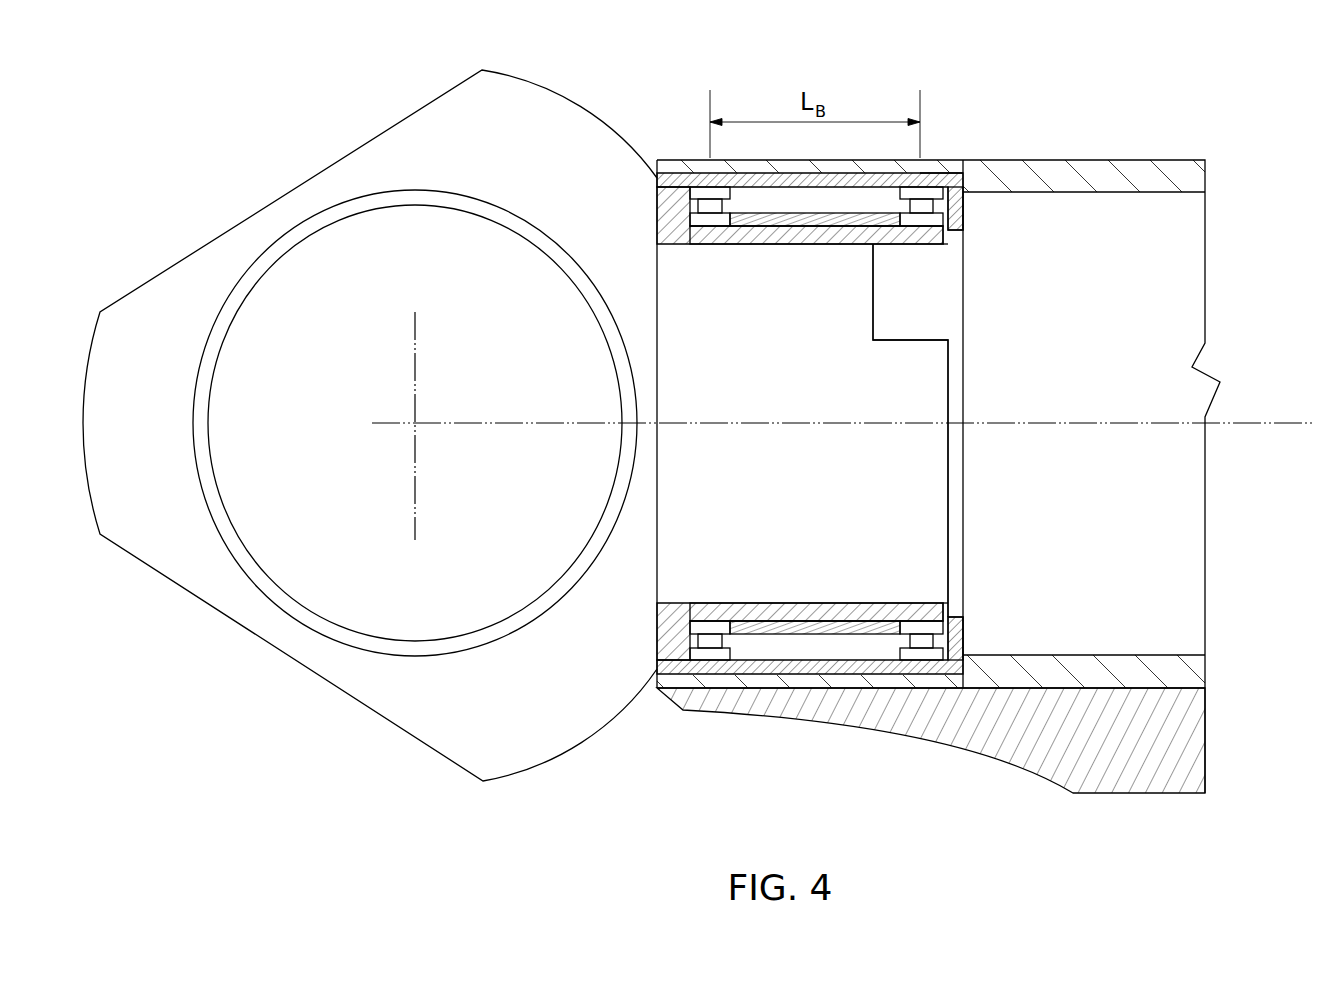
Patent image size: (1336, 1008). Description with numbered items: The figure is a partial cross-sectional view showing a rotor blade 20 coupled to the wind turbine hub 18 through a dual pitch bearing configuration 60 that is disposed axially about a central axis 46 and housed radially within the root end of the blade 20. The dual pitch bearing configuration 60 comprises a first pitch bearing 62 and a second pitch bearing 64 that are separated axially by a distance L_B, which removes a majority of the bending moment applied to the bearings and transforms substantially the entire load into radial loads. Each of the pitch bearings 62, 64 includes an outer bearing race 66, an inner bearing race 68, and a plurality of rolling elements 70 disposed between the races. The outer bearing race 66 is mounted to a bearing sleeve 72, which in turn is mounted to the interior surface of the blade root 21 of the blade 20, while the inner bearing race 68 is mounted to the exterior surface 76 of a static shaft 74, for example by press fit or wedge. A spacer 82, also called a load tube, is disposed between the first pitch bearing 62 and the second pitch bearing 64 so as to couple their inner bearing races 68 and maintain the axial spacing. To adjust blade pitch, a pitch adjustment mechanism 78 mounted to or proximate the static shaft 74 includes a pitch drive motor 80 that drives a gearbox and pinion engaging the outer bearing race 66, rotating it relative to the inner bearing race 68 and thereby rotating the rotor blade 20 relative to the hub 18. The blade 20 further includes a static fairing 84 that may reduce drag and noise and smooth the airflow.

The hub 18 is at (498, 90).
The rotor blade 20 is at (1140, 162).
The blade root 21 is at (922, 180).
The central axis 46 is at (1294, 423).
The dual pitch bearing configuration 60 is at (816, 649).
The first pitch bearing 62 is at (708, 610).
The second pitch bearing 64 is at (921, 610).
The outer bearing race 66 is at (907, 200).
The inner bearing race 68 is at (883, 637).
The rolling elements 70 is at (666, 208).
The bearing sleeve 72 is at (695, 178).
The static shaft 74 is at (657, 233).
The exterior surface 76 is at (763, 627).
The pitch adjustment mechanism 78 is at (965, 318).
The pitch drive motor 80 is at (910, 430).
The spacer 82 is at (815, 246).
The static fairing 84 is at (993, 748).